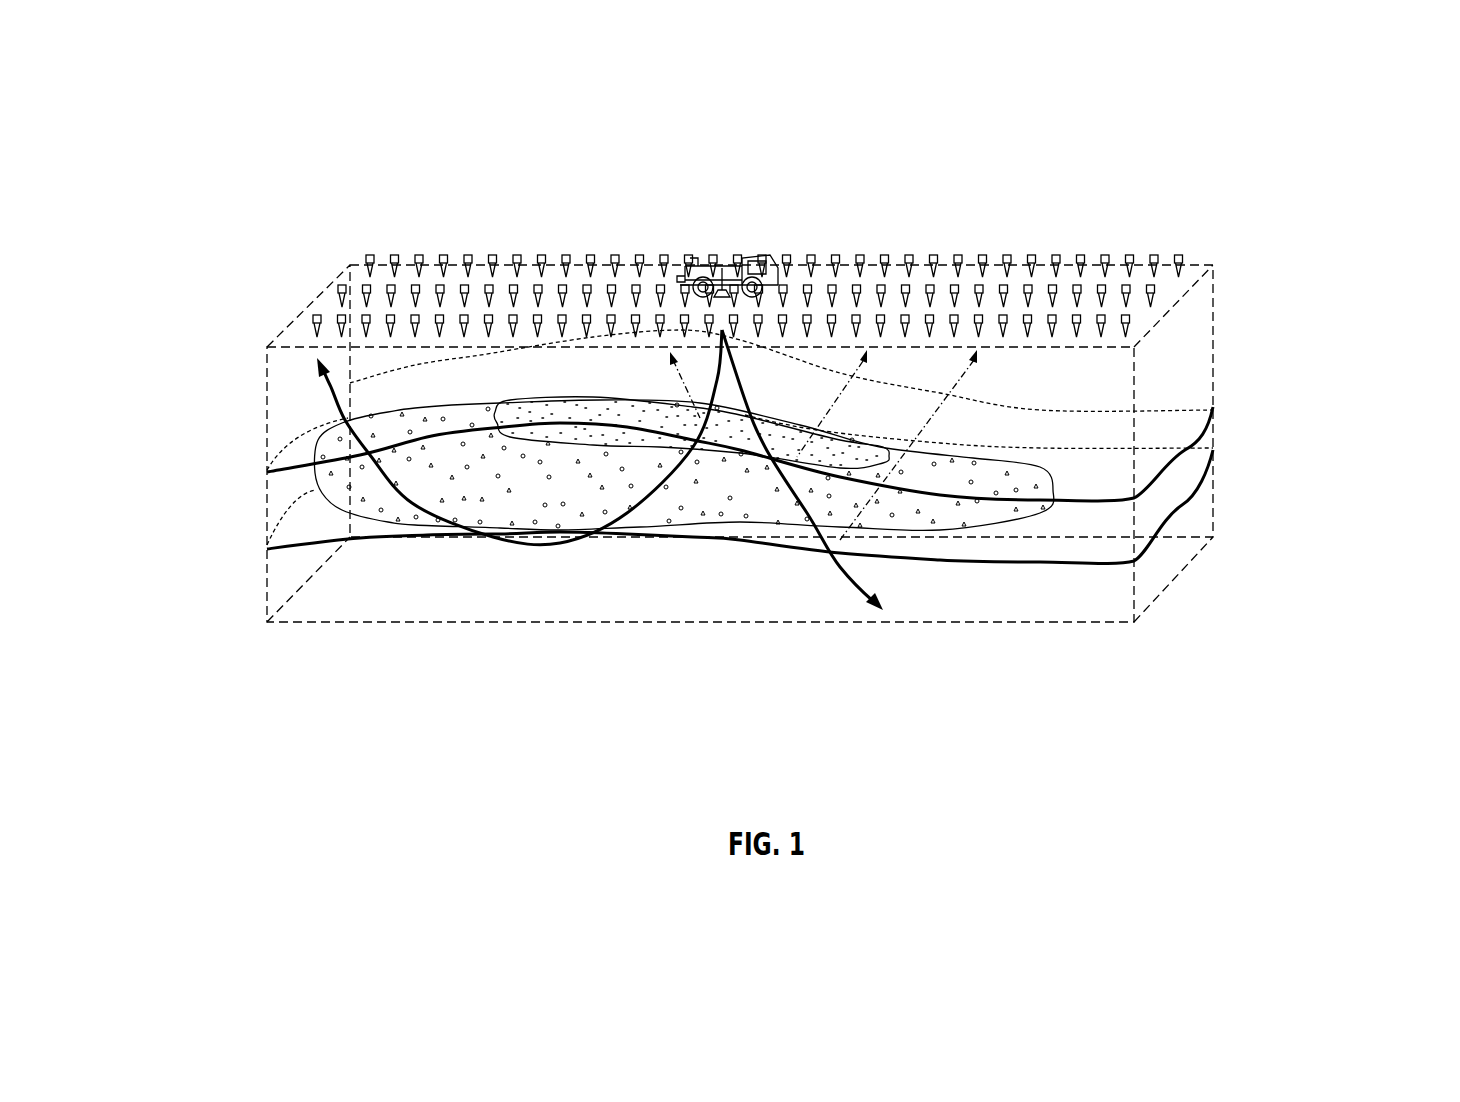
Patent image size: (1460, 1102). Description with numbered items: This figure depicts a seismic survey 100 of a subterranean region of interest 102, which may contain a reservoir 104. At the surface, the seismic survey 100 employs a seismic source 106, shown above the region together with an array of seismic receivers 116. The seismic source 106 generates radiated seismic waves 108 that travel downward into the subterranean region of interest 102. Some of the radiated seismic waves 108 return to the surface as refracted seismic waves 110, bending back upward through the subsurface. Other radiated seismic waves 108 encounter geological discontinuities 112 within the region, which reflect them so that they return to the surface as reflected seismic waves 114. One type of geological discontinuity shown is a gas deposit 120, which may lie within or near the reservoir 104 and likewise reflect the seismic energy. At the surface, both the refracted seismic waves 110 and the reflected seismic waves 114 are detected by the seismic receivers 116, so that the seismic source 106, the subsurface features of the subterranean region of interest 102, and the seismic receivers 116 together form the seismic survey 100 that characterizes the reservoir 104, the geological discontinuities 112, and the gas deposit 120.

The seismic survey 100 is at (1234, 154).
The subterranean region of interest 102 is at (1009, 636).
The reservoir 104 is at (980, 480).
The seismic source 106 is at (726, 238).
The radiated seismic waves 108 is at (849, 597).
The refracted seismic waves 110 is at (418, 520).
The geological discontinuities 112 is at (348, 548).
The reflected seismic waves 114 is at (862, 400).
The seismic receivers 116 is at (983, 247).
The gas deposit 120 is at (523, 397).